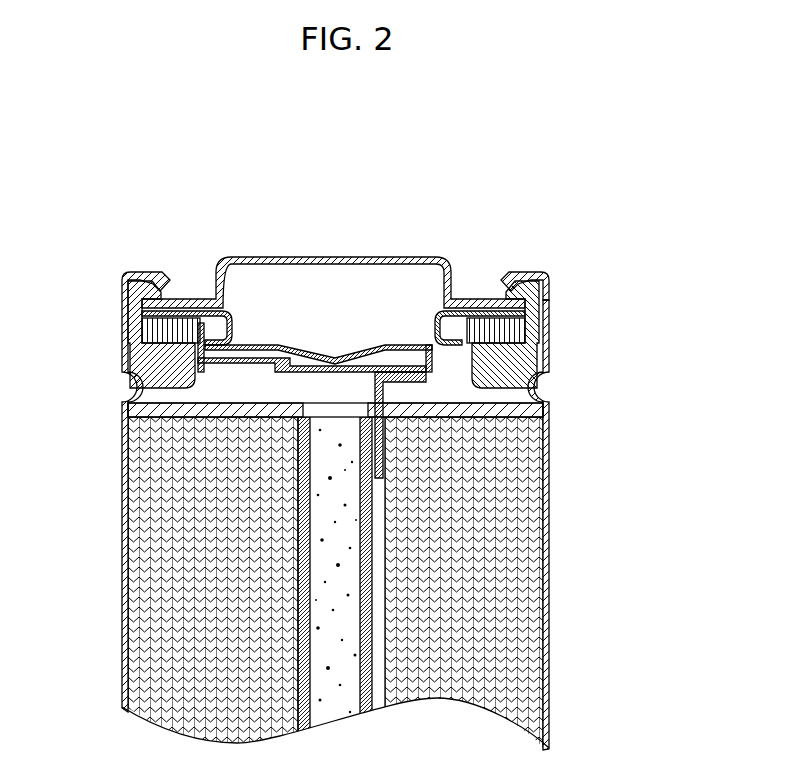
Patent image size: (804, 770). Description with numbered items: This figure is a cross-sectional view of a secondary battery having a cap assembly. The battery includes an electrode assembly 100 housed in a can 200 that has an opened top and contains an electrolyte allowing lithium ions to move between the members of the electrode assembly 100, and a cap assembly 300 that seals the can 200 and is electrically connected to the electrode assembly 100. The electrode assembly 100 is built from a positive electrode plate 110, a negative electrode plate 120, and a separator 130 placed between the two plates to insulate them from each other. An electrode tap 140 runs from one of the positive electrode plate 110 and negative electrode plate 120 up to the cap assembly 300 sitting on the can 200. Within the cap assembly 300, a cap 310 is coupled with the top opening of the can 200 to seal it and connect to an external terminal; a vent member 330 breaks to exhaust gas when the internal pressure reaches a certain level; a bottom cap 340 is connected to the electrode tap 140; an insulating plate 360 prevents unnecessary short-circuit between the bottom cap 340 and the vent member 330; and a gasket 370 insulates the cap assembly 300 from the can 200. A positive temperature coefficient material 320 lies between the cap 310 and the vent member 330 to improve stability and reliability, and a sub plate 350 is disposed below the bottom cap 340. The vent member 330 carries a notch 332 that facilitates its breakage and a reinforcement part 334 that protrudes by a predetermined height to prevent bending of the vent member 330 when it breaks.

The electrode assembly 100 is at (396, 564).
The positive electrode plate 110 is at (541, 563).
The negative electrode plate 120 is at (527, 500).
The separator 130 is at (517, 530).
The electrode tap 140 is at (495, 425).
The can 200 is at (126, 493).
The cap assembly 300 is at (366, 282).
The cap 310 is at (300, 258).
The positive temperature coefficient material 320 is at (448, 300).
The vent member 330 is at (518, 290).
The notch 332 is at (226, 268).
The reinforcement part 334 is at (272, 342).
The bottom cap 340 is at (390, 364).
The sub plate 350 is at (362, 352).
The insulating plate 360 is at (493, 318).
The gasket 370 is at (552, 255).